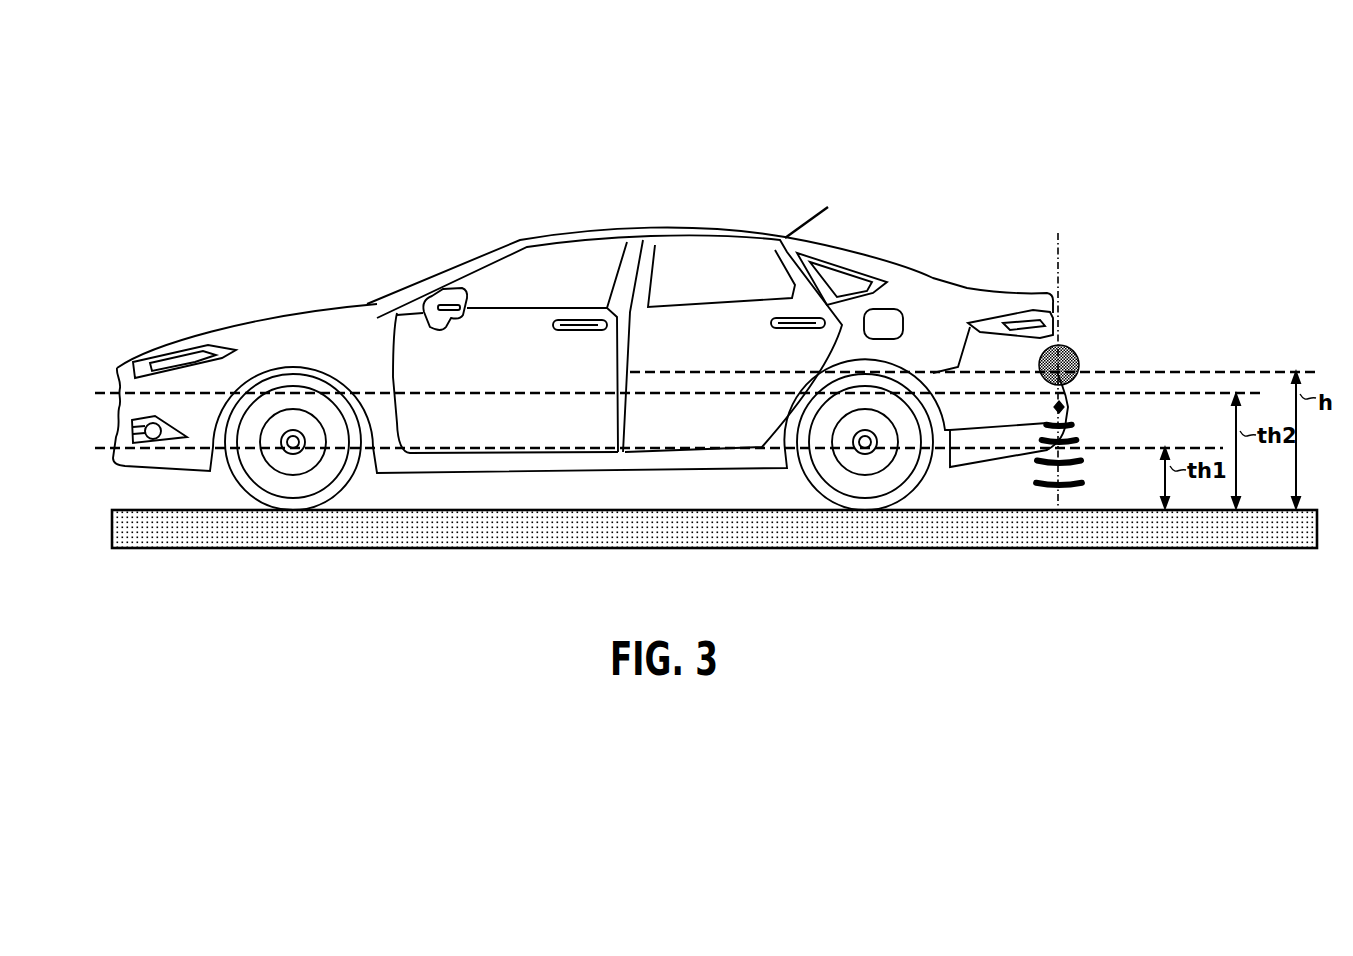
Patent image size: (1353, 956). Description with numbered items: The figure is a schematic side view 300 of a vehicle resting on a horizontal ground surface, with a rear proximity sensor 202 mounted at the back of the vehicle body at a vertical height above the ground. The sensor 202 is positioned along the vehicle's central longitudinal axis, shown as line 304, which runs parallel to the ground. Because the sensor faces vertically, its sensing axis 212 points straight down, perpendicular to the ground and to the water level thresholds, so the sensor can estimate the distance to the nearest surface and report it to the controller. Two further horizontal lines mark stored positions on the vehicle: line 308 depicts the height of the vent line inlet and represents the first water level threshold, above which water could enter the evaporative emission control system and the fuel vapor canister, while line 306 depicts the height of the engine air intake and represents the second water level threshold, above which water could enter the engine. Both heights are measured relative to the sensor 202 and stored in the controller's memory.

The vehicle ride height detection scenario 300 is at (1200, 108).
The sensing axis 212 is at (1063, 249).
The proximity sensor 202 is at (1071, 346).
The line 304 is at (1231, 366).
The line 306 is at (489, 386).
The line 308 is at (489, 441).